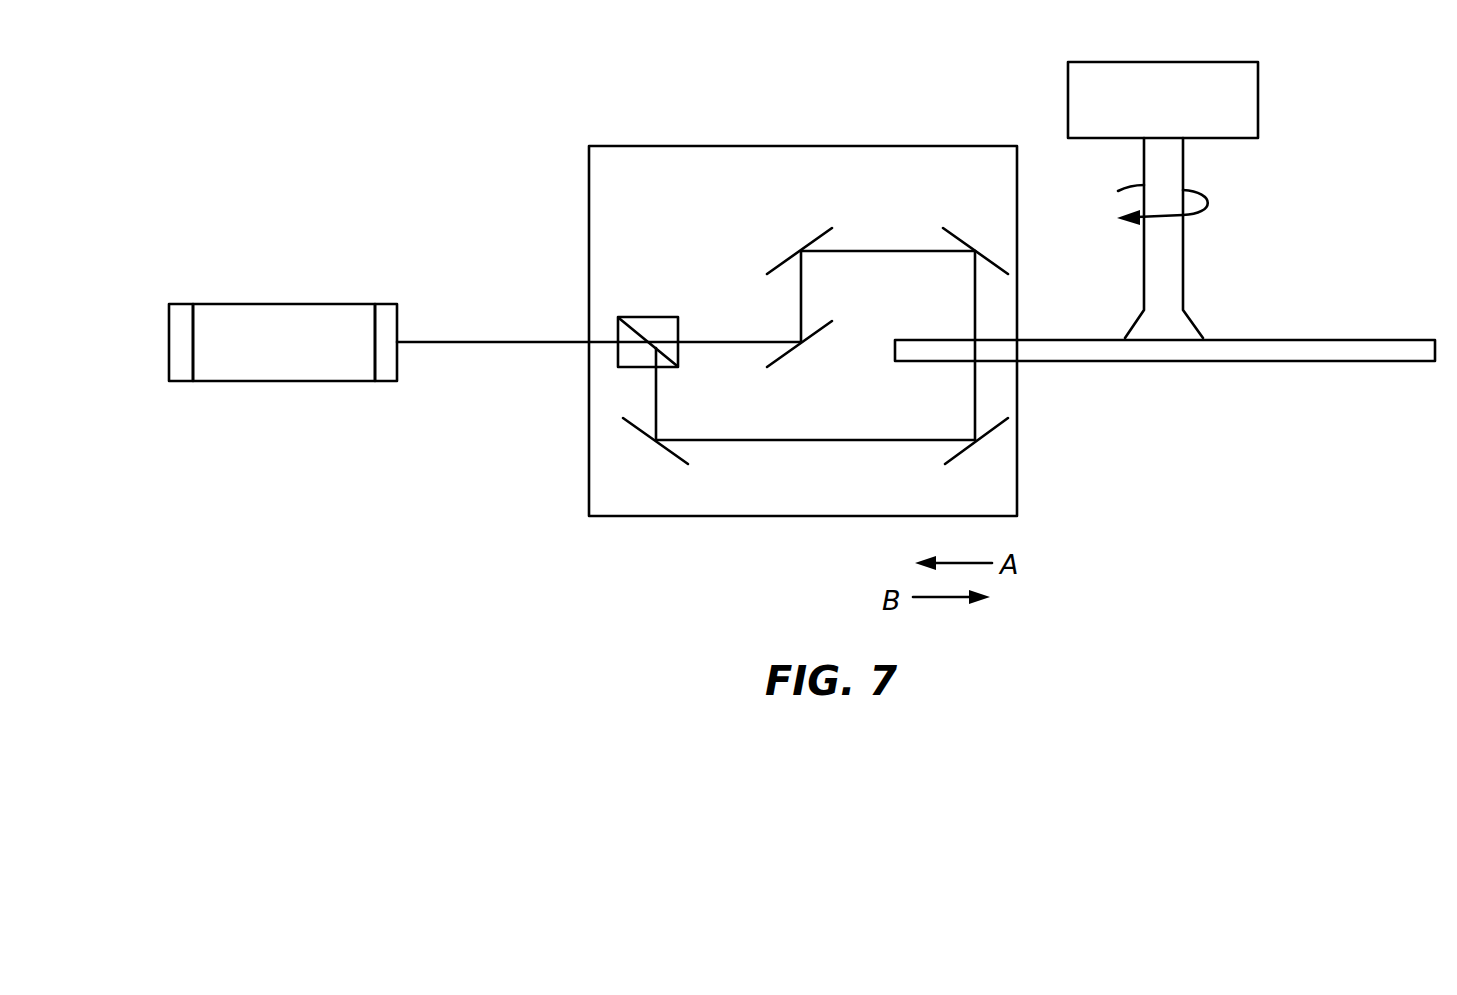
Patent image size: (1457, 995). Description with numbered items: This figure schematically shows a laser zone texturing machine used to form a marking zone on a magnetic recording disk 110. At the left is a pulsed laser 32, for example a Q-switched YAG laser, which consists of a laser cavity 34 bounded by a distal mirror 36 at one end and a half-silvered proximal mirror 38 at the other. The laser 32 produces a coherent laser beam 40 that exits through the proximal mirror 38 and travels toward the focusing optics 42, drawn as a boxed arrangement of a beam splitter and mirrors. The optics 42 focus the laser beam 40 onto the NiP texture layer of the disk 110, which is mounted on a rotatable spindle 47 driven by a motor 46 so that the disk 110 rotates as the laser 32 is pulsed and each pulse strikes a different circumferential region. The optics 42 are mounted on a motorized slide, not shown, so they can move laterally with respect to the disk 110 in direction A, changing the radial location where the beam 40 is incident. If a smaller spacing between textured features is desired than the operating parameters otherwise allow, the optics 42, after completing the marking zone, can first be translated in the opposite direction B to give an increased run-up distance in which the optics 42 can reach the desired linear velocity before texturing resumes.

The pulsed laser 32 is at (287, 298).
The laser cavity 34 is at (354, 314).
The distal mirror 36 is at (179, 370).
The half-silvered proximal mirror 38 is at (390, 370).
The laser beam 40 is at (552, 334).
The focusing optics 42 is at (998, 156).
The motor 46 is at (1240, 71).
The spindle 47 is at (1170, 275).
The disk 110 is at (1375, 362).